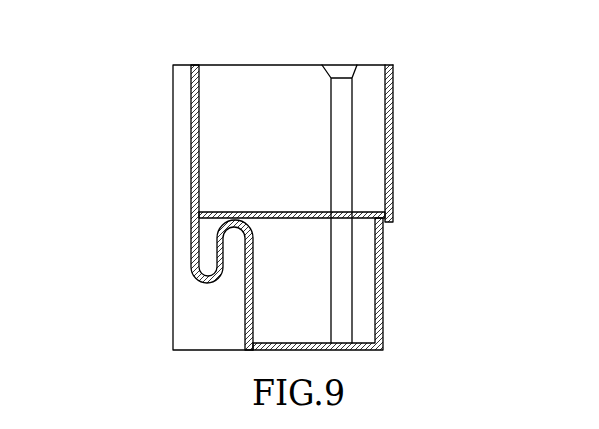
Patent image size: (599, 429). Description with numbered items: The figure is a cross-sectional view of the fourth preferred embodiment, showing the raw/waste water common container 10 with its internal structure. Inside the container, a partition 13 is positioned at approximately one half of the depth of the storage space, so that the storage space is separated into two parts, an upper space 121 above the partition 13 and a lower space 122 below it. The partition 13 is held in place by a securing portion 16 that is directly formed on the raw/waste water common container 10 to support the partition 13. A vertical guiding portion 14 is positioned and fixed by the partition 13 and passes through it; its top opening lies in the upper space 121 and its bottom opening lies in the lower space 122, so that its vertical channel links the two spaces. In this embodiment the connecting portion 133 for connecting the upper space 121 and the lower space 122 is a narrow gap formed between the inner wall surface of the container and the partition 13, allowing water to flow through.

The raw/waste water common container 10 is at (397, 73).
The upper space 121 is at (265, 100).
The lower space 122 is at (310, 305).
The partition 13 is at (260, 213).
The connecting portion 133 is at (196, 224).
The vertical guiding portion 14 is at (353, 133).
The securing portion 16 is at (243, 223).